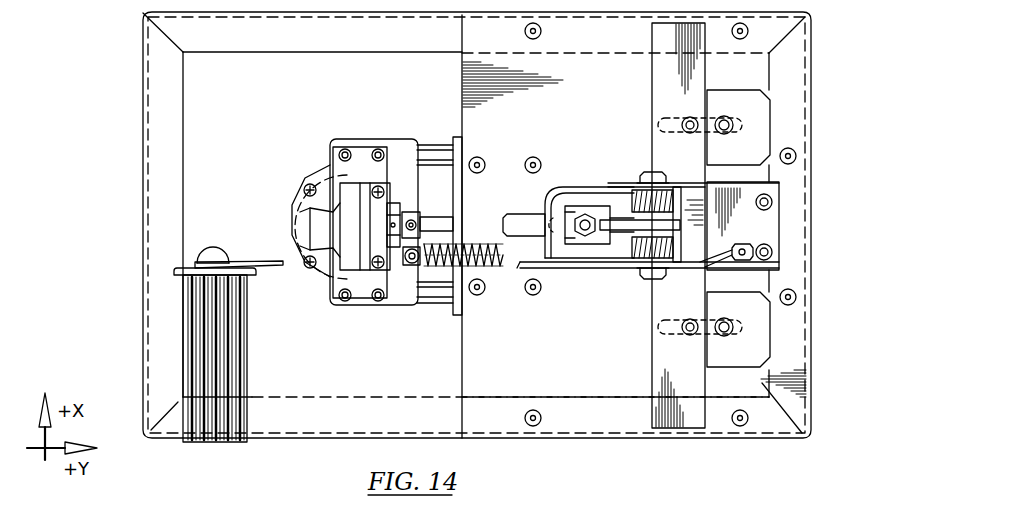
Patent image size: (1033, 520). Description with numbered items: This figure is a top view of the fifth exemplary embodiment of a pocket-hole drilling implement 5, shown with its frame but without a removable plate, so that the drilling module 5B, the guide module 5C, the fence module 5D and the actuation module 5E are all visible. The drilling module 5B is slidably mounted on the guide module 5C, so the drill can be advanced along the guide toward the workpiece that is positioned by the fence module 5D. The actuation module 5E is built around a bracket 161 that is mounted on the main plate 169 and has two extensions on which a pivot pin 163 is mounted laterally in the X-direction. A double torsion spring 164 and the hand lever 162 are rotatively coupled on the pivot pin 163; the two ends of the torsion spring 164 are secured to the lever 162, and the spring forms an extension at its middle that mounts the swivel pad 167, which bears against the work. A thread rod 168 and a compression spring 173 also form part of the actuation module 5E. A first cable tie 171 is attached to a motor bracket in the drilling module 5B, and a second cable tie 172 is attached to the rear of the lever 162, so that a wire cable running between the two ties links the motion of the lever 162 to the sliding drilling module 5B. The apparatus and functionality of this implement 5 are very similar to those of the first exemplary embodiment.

The pocket-hole drilling implement 5 is at (118, 284).
The drilling module 5B is at (365, 136).
The guide module 5C is at (447, 128).
The fence module 5D is at (715, 72).
The actuation module 5E is at (785, 225).
The bracket 161 is at (783, 207).
The lever 162 is at (603, 267).
The pivot pin 163 is at (652, 170).
The torsion spring 164 is at (623, 197).
The swivel pad 167 is at (563, 223).
The thread rod 168 is at (586, 220).
The main plate 169 is at (529, 379).
The first cable tie 171 is at (413, 267).
The second cable tie 172 is at (748, 262).
The compression spring 173 is at (443, 268).